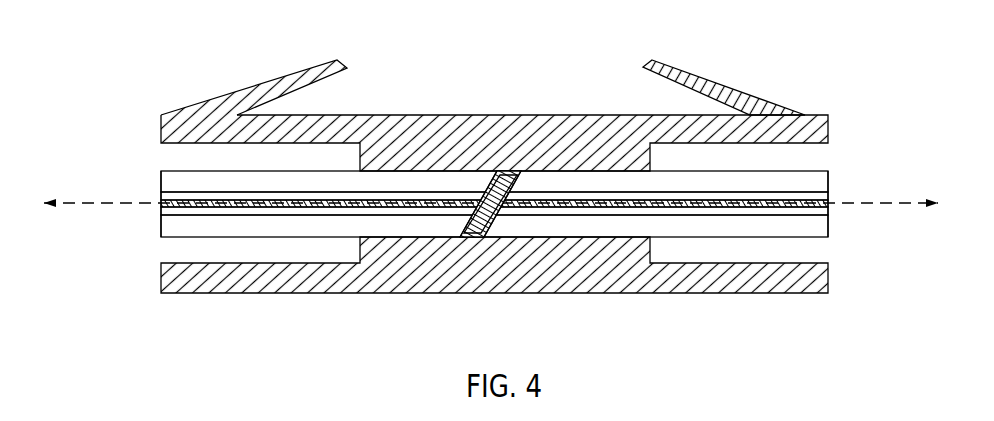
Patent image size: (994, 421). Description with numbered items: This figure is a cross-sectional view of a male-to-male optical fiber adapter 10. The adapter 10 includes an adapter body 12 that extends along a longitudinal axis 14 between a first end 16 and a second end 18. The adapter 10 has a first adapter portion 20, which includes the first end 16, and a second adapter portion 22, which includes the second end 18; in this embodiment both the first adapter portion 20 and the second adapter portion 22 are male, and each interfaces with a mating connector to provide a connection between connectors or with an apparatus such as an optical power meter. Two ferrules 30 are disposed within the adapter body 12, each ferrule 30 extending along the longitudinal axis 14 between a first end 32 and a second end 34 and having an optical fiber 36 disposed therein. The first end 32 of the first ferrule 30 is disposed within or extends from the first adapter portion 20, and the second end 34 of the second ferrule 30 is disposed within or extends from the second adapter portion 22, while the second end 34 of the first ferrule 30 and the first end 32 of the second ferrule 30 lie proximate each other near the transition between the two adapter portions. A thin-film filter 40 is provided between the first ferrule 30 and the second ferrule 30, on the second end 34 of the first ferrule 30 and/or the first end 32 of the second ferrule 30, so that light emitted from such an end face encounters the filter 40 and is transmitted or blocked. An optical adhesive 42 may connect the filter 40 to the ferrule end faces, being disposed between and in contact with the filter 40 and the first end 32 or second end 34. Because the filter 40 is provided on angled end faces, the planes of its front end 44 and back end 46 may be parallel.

The adapter 10 is at (420, 70).
The adapter body 12 is at (605, 114).
The longitudinal axis 14 is at (109, 204).
The first end 16 is at (160, 130).
The second end 18 is at (829, 130).
The first adapter portion 20 is at (386, 152).
The second adapter portion 22 is at (596, 270).
The ferrule 30 is at (290, 222).
The first end 32 is at (159, 238).
The second end 34 is at (831, 238).
The optical fiber 36 is at (159, 202).
The thin-film filter 40 is at (518, 171).
The optical adhesive 42 is at (461, 232).
The front end 44 is at (498, 173).
The back end 46 is at (525, 172).